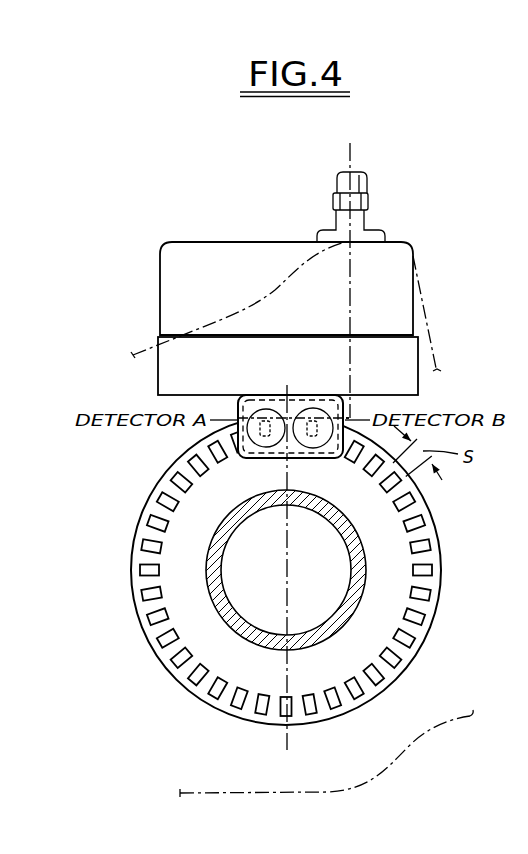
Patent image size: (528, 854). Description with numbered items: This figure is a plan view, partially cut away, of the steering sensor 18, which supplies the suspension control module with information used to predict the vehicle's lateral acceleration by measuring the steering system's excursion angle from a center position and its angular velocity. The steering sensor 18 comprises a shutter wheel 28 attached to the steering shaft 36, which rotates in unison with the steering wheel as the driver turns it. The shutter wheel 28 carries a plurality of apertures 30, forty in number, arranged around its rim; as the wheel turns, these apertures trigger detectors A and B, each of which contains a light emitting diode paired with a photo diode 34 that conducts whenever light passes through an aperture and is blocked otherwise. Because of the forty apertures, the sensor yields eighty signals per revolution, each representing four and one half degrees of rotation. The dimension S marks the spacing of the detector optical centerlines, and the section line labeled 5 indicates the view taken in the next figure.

The section line 5- 5 is at (353, 150).
The steering sensor 18 is at (465, 326).
The shutter wheel 28 is at (445, 580).
The apertures 30 is at (430, 507).
The photo diode 34 is at (238, 437).
The steering shaft 36 is at (341, 615).